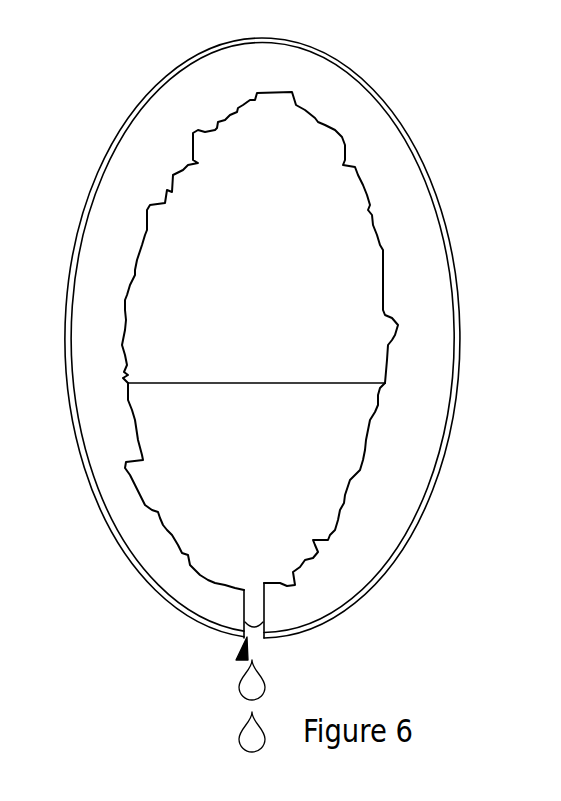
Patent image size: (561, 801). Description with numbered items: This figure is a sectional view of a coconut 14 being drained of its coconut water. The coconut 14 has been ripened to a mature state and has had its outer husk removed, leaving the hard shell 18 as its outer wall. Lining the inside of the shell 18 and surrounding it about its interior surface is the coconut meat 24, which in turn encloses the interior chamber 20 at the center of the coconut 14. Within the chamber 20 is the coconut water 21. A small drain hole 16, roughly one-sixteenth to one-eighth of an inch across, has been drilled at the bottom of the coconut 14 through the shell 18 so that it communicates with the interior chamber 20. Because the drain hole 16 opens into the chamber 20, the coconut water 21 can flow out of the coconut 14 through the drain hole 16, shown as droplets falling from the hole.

The coconut 14 is at (427, 173).
The shell 18 is at (447, 233).
The interior chamber 20 is at (253, 227).
The coconut water 21 is at (253, 477).
The coconut meat 24 is at (367, 513).
The drain hole 16 is at (238, 658).